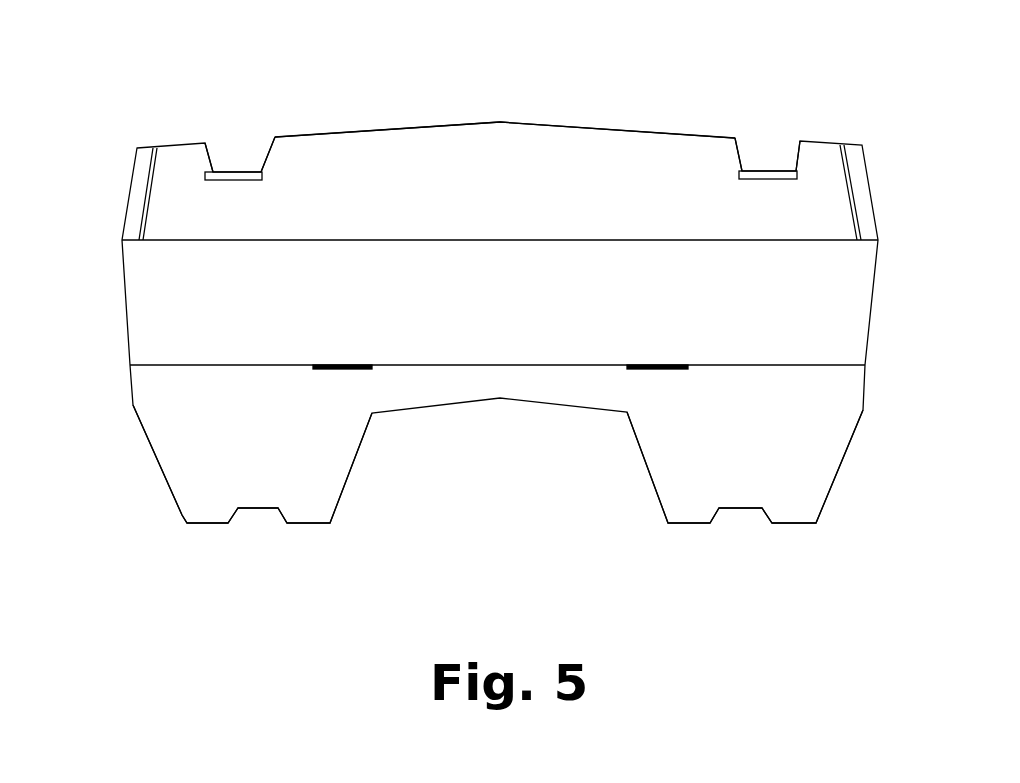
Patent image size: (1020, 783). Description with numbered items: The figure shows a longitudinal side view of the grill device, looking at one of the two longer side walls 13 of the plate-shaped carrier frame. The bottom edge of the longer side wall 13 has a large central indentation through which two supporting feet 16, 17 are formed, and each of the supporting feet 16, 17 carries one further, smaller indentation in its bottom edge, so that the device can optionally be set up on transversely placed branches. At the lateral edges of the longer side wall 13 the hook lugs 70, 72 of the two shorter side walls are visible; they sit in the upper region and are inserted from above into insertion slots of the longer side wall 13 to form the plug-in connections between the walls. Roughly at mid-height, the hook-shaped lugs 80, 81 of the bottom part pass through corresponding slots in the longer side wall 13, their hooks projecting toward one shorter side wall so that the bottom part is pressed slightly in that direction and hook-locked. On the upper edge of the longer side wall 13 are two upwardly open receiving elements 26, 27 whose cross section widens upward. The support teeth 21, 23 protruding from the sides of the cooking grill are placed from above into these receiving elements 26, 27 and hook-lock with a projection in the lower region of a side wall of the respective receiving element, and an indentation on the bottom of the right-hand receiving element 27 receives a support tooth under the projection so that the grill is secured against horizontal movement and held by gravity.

The longer side wall 13 is at (567, 150).
The support tooth 21 is at (237, 173).
The receiving element 26 is at (254, 148).
The support tooth 23 is at (762, 165).
The receiving element 27 is at (786, 148).
The hook lug 70 is at (143, 220).
The hook lug 72 is at (852, 200).
The lug 80 is at (337, 365).
The lug 81 is at (672, 365).
The supporting foot 16 is at (328, 472).
The supporting foot 17 is at (815, 493).